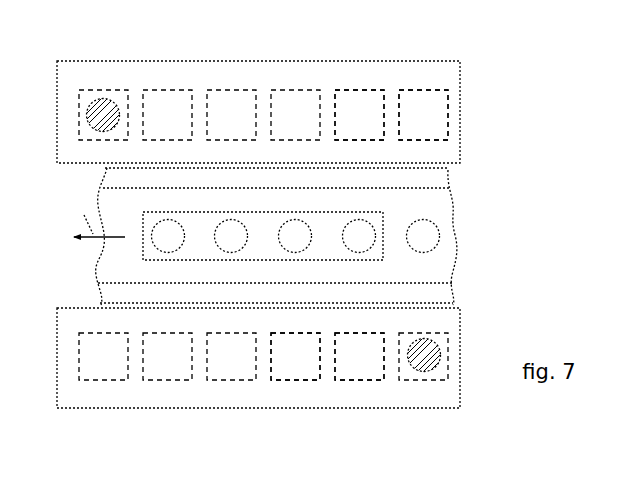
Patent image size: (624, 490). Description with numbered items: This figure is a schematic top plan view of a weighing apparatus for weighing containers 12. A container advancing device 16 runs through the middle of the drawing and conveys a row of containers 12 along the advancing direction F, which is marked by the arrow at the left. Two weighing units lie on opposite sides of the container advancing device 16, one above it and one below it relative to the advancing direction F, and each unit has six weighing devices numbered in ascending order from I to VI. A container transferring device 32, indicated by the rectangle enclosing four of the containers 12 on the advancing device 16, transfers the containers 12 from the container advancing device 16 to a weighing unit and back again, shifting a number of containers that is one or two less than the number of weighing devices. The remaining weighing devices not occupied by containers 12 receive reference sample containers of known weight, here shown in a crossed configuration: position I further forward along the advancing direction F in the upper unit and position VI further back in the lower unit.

The containers 12 is at (362, 234).
The container advancing device 16 is at (436, 262).
The container transferring device 32 is at (146, 253).
The advancing direction F is at (99, 217).